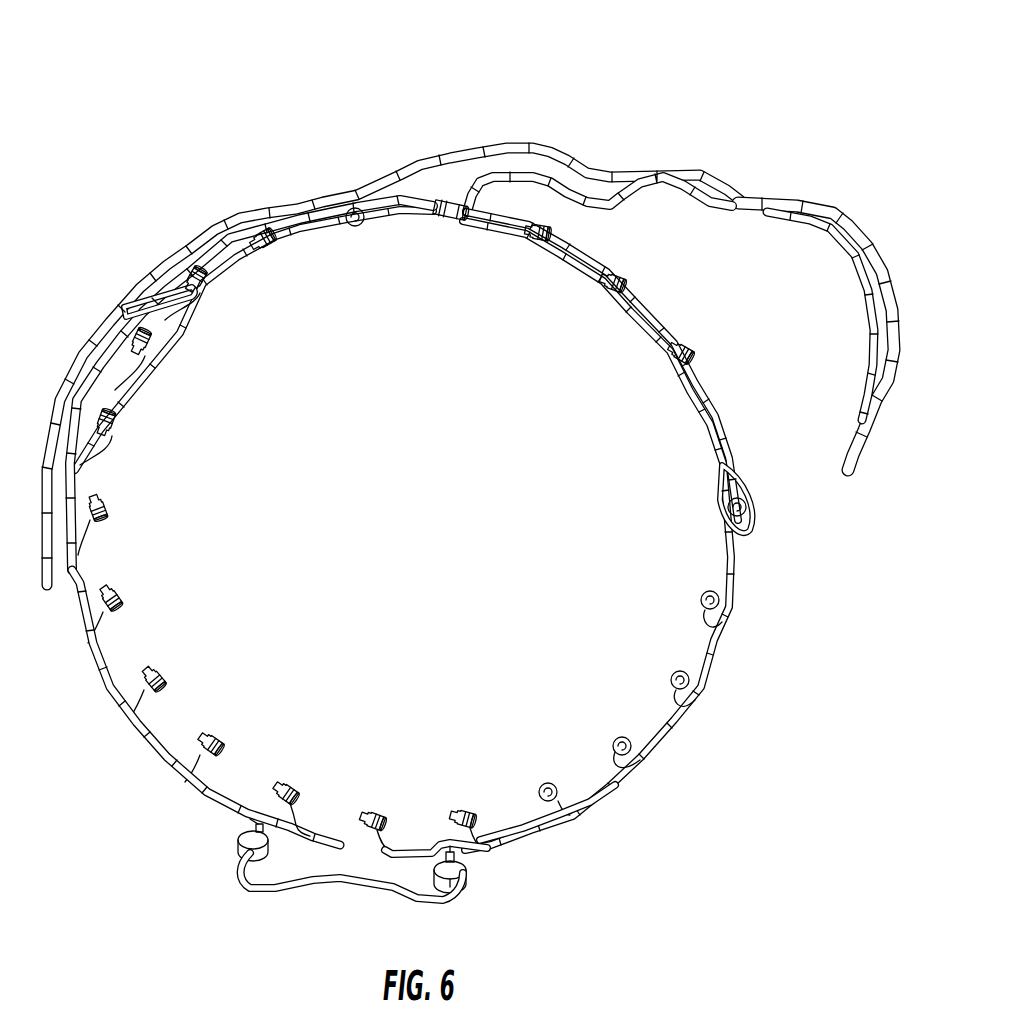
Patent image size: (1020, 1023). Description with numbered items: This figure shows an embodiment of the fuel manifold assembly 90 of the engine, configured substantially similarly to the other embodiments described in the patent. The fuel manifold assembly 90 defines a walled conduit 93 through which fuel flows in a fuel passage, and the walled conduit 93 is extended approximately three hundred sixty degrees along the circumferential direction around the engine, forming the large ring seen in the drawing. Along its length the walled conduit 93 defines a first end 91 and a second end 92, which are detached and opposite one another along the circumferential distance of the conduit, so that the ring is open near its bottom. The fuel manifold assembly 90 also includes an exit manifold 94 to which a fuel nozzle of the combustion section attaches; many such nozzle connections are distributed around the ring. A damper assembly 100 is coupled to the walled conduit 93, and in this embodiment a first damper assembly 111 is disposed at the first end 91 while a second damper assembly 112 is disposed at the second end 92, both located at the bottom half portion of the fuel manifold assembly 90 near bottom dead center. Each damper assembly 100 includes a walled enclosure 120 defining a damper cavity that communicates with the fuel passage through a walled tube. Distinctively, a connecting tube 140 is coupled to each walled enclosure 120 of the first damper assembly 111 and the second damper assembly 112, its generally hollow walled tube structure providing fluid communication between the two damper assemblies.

The fuel manifold assembly 90 is at (617, 162).
The first end 91 is at (428, 829).
The second end 92 is at (243, 798).
The walled conduit 93 is at (525, 825).
The exit manifold 94 is at (300, 795).
The damper assembly 100 is at (231, 855).
The first damper assembly 111 is at (478, 868).
The second damper assembly 112 is at (221, 832).
The walled enclosure 120 is at (263, 837).
The connecting tube 140 is at (340, 884).